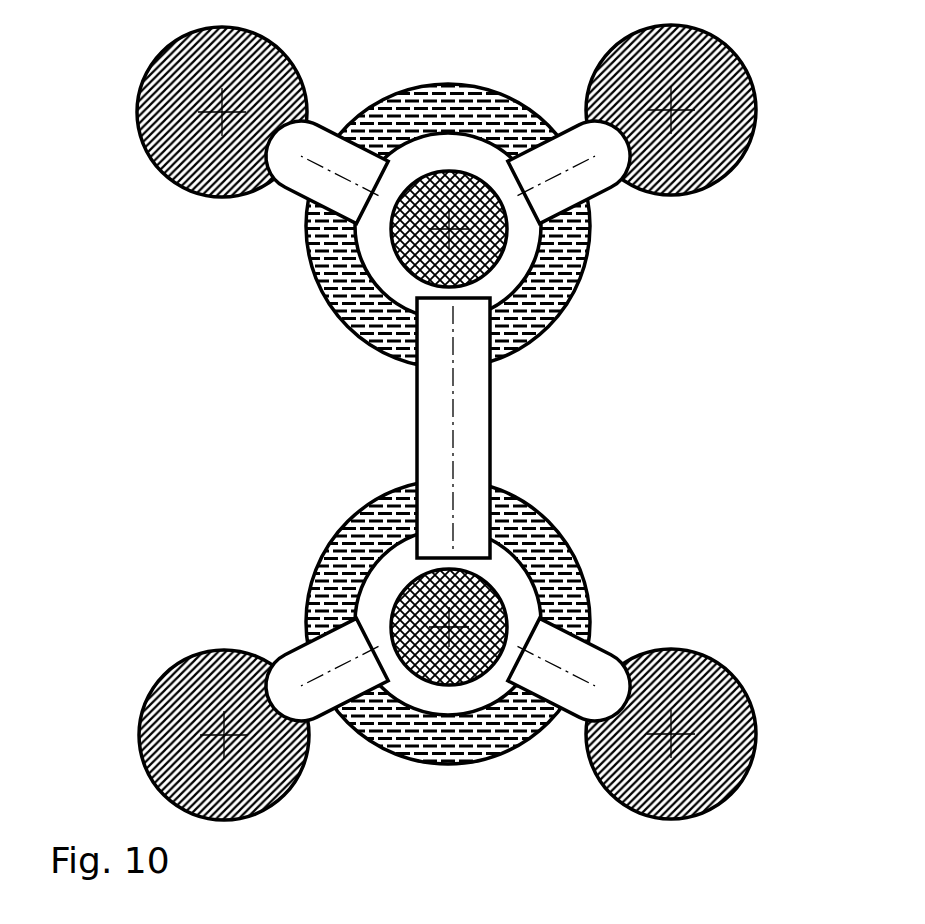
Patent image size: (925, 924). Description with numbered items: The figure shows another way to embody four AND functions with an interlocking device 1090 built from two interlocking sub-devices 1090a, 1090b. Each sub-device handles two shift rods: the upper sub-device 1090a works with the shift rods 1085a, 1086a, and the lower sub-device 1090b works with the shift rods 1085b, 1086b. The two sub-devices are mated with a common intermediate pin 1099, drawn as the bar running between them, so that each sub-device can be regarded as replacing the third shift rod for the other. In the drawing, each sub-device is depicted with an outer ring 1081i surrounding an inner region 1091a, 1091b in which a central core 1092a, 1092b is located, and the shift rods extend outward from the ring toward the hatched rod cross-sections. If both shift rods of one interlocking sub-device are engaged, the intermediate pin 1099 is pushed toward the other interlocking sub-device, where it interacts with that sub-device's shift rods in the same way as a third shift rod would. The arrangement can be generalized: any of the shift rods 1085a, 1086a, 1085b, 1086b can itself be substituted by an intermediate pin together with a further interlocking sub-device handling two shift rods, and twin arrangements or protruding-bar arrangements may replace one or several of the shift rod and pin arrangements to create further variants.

The magnetic structure ring 1081i is at (575, 302).
The shift rod 1085a is at (290, 52).
The shift rod 1085b is at (213, 650).
The shift rod 1086a is at (630, 83).
The shift rod 1086b is at (692, 648).
The interlocking device 1090 is at (395, 433).
The interlocking sub-device 1090a is at (446, 209).
The interlocking sub-device 1090b is at (447, 642).
The gap region 1091a is at (512, 277).
The gap region 1091b is at (405, 678).
The central core 1092a is at (478, 263).
The central core 1092b is at (465, 668).
The intermediate pin 1099 is at (492, 417).